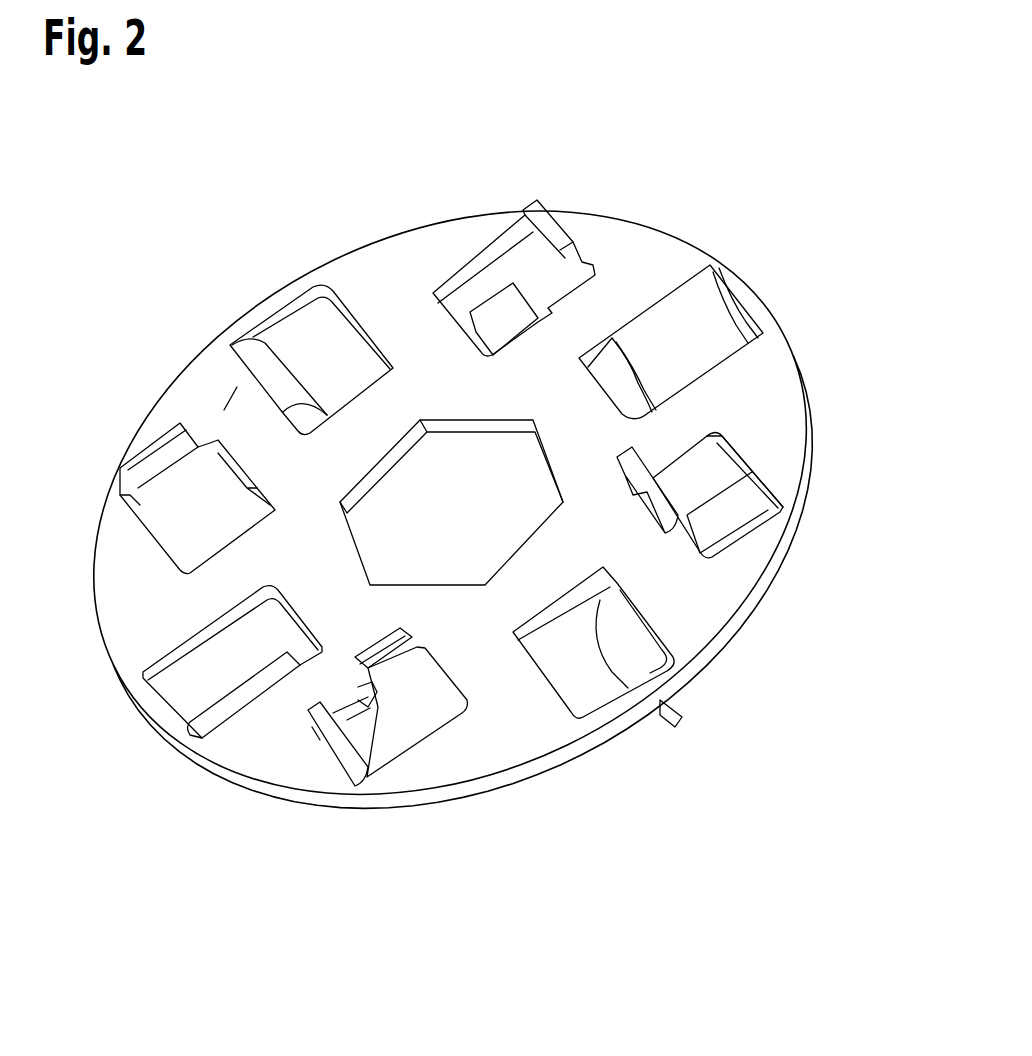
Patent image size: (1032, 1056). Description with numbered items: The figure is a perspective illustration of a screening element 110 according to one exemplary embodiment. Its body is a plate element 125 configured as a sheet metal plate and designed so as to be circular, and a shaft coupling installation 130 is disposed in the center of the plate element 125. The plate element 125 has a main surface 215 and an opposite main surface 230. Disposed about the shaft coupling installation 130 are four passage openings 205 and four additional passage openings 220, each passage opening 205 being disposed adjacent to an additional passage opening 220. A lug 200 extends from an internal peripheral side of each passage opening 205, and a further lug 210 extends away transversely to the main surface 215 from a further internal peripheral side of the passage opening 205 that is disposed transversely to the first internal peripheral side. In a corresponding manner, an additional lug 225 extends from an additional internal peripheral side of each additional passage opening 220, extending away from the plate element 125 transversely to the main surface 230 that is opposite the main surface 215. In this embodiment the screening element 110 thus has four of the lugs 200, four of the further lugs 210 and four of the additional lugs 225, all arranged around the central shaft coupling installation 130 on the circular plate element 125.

The screening element 110 is at (262, 204).
The plate element 125 is at (388, 290).
The shaft coupling installation 130 is at (552, 455).
The lug 200 is at (760, 530).
The passage opening 205 is at (710, 475).
The further lug 210 is at (647, 487).
The main surface 215 is at (227, 405).
The additional passage opening 220 is at (567, 663).
The additional lug 225 is at (683, 717).
The main surface 230 is at (311, 808).